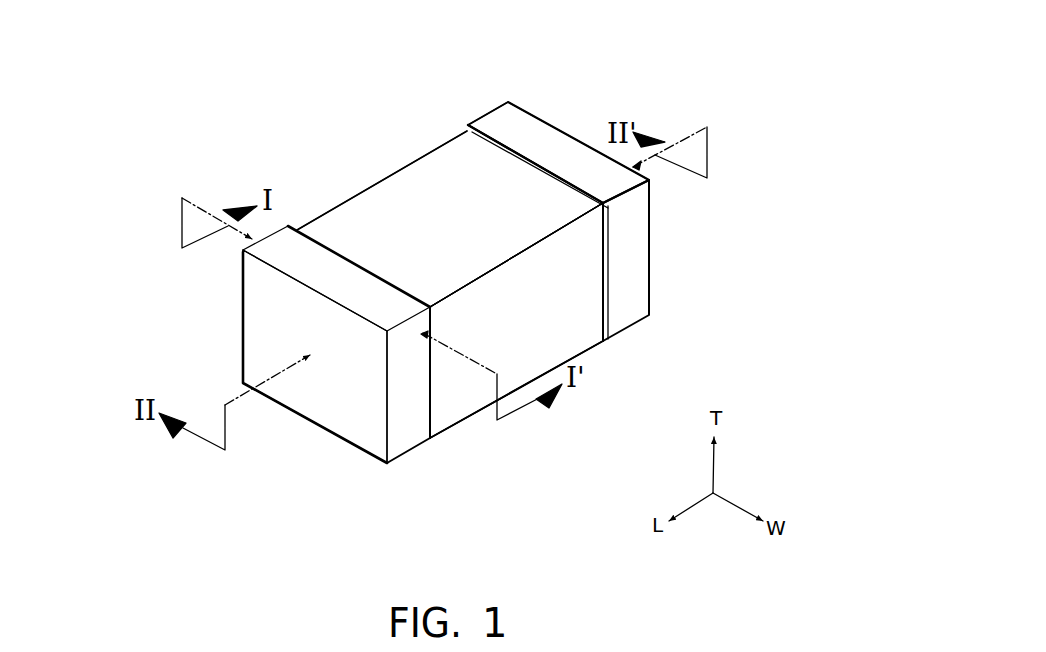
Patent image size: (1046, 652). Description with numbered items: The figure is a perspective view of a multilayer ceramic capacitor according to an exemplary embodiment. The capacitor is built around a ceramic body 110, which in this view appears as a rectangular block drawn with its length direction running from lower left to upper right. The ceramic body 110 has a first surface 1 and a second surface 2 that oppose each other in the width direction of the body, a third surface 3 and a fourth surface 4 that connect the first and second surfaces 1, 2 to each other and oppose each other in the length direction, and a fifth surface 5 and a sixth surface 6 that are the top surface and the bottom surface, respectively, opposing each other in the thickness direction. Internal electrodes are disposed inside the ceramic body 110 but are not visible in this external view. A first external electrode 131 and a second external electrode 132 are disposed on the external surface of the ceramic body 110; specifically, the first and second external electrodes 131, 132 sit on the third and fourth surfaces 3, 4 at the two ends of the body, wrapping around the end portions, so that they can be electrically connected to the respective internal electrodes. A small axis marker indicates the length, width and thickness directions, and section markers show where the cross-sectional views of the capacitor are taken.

The first surface 1 is at (404, 148).
The second surface 2 is at (571, 302).
The third surface 3 is at (336, 406).
The fourth surface 4 is at (574, 121).
The fifth surface 5 is at (469, 183).
The sixth surface 6 is at (462, 417).
The ceramic body 110 is at (455, 163).
The first external electrode 131 is at (403, 445).
The second external electrode 132 is at (643, 283).